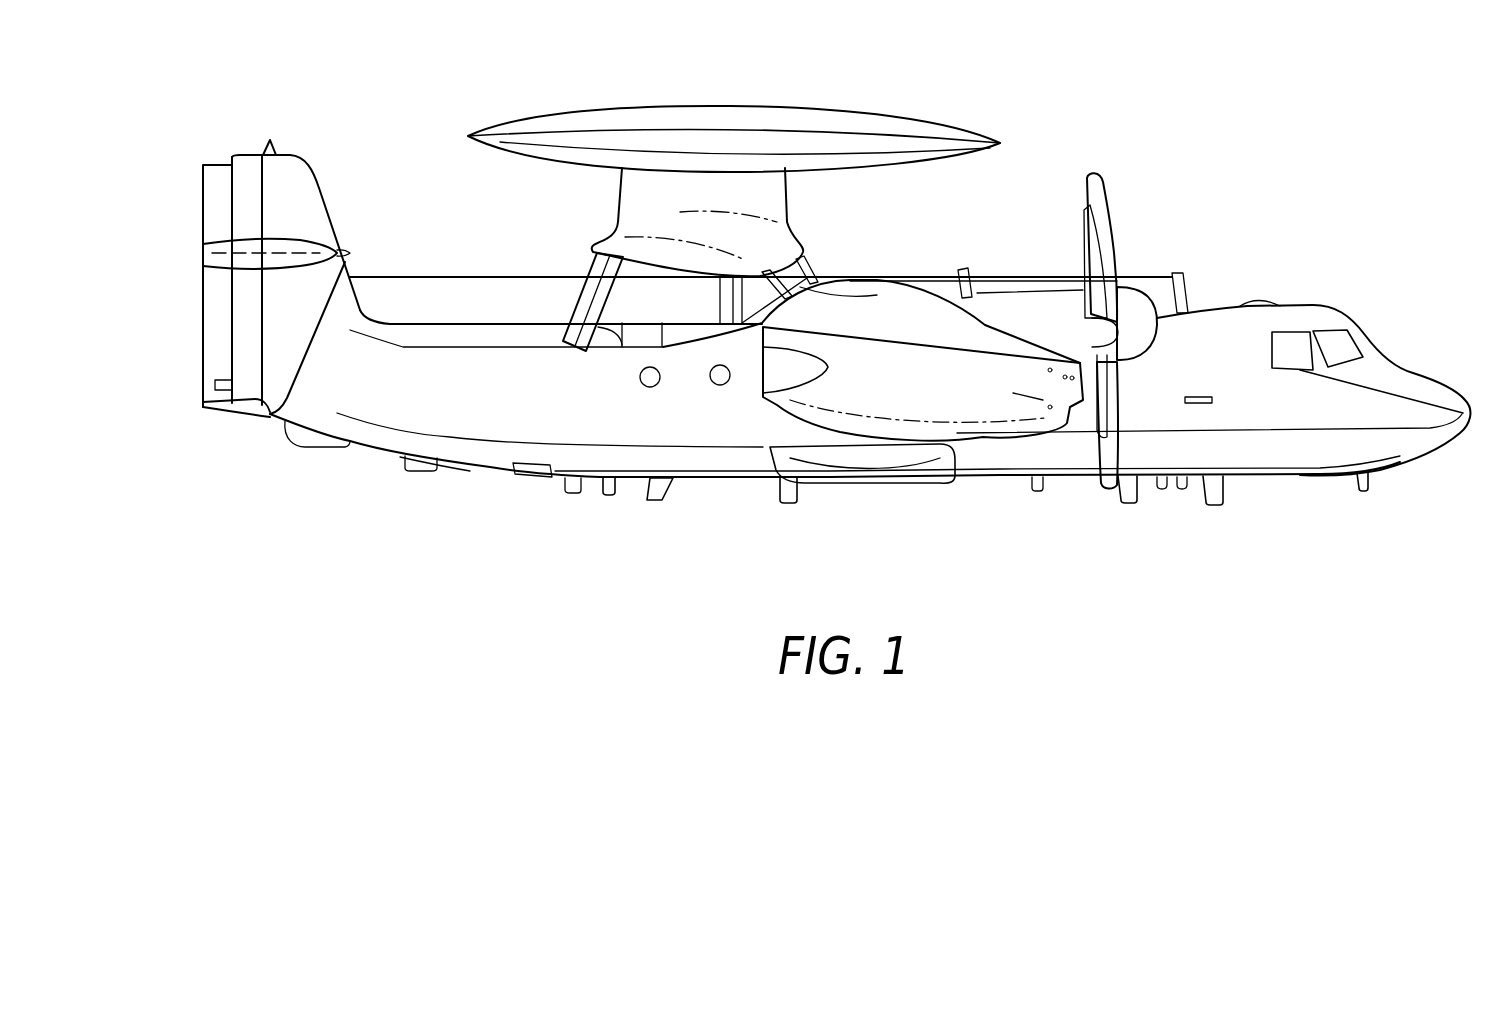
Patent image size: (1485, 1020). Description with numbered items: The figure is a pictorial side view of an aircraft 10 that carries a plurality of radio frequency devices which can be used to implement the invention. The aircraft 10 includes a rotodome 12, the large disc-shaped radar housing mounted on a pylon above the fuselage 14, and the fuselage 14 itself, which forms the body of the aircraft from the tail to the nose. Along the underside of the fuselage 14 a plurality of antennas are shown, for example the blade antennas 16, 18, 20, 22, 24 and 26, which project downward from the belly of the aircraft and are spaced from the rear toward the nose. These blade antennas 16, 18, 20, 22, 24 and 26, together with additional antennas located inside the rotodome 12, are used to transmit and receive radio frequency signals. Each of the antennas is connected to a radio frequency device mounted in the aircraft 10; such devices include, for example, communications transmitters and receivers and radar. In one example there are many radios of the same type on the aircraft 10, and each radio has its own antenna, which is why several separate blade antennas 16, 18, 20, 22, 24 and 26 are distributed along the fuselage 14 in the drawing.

The aircraft 10 is at (1268, 206).
The rotodome 12 is at (915, 125).
The fuselage 14 is at (468, 478).
The blade antenna 16 is at (607, 496).
The blade antenna 18 is at (653, 501).
The blade antenna 20 is at (790, 504).
The blade antenna 22 is at (1130, 504).
The blade antenna 24 is at (1213, 506).
The blade antenna 26 is at (1362, 491).